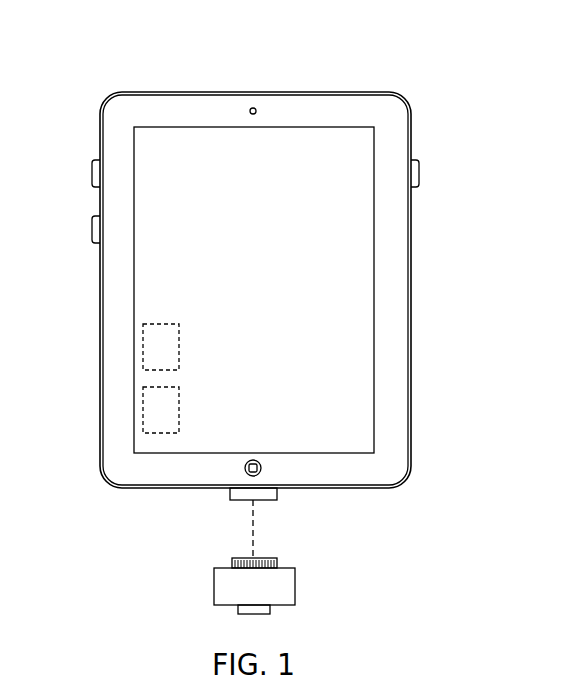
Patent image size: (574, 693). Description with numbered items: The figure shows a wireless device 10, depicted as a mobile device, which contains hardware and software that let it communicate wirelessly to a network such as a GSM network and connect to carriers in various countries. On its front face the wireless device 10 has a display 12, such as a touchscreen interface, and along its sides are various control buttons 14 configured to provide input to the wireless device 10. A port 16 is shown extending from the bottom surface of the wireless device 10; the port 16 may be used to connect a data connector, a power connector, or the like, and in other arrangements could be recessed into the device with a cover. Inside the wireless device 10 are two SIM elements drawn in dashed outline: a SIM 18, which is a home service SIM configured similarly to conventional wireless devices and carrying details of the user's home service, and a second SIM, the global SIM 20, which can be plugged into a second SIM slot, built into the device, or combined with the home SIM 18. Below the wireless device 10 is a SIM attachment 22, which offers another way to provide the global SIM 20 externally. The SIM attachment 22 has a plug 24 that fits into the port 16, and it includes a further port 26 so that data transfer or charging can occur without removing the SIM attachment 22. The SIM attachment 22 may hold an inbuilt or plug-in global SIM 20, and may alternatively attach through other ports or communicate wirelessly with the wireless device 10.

The wireless device 10 is at (490, 239).
The display 12 is at (360, 348).
The control buttons 14 is at (92, 174).
The port 16 is at (277, 492).
The SIM 18 is at (148, 409).
The global SIM 20 is at (148, 345).
The SIM attachment 22 is at (295, 586).
The plug 24 is at (277, 563).
The further port 26 is at (270, 611).